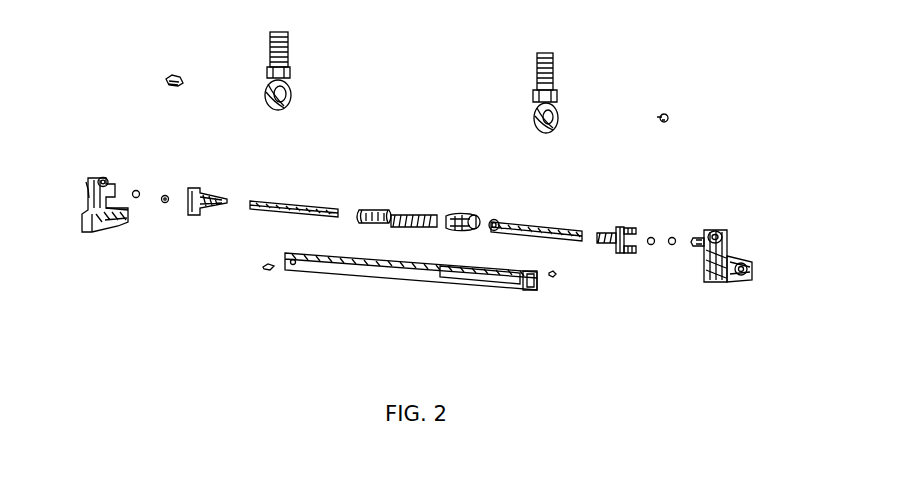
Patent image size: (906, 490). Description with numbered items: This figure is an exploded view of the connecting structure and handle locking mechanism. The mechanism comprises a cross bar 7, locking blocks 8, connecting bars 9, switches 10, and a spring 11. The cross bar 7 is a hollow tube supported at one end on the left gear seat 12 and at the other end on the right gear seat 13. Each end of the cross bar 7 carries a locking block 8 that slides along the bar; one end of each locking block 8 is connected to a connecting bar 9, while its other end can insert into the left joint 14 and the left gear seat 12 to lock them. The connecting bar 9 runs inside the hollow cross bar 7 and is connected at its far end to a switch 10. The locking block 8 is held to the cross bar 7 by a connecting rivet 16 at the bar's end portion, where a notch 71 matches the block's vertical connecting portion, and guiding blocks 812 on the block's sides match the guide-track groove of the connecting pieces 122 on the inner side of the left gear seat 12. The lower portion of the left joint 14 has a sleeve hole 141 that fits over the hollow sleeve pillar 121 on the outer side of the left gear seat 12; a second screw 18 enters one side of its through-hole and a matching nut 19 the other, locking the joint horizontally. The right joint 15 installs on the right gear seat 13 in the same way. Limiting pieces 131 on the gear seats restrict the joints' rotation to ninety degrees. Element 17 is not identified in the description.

The cross bar 7 is at (419, 309).
The locking block 8 is at (610, 245).
The connecting bar 9 is at (530, 212).
The switch 10 is at (468, 214).
The spring 11 is at (420, 213).
The left gear seat 12 is at (83, 190).
The right gear seat 13 is at (742, 241).
The left joint 14 is at (245, 57).
The right joint 15 is at (560, 68).
The connecting rivet 16 is at (493, 285).
The washer 17 is at (488, 216).
The second screw 18 is at (167, 72).
The nut 19 is at (167, 195).
The notch 71 is at (530, 290).
The sleeve pillar 121 is at (87, 186).
The connecting piece 122 is at (124, 169).
The limiting piece 131 is at (742, 250).
The sleeve hole 141 is at (265, 86).
The guiding block 812 is at (614, 250).